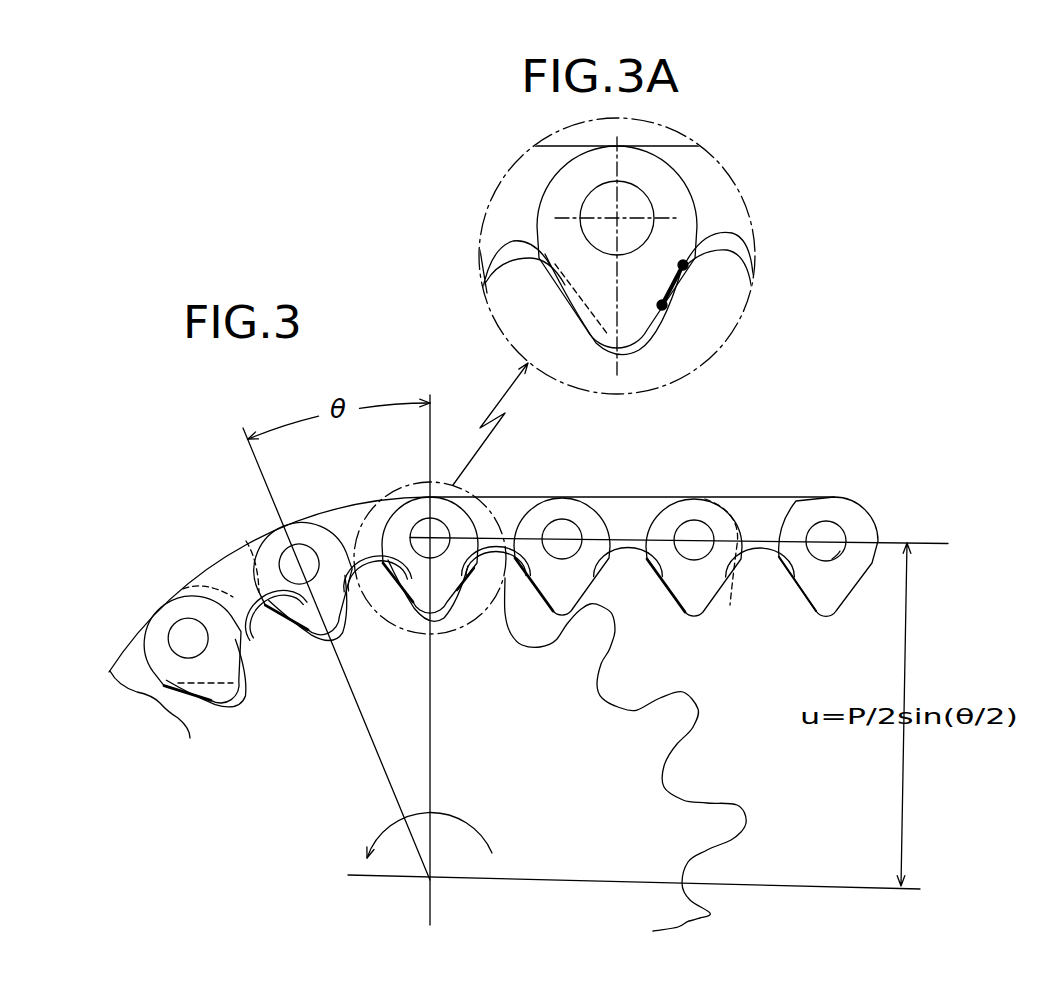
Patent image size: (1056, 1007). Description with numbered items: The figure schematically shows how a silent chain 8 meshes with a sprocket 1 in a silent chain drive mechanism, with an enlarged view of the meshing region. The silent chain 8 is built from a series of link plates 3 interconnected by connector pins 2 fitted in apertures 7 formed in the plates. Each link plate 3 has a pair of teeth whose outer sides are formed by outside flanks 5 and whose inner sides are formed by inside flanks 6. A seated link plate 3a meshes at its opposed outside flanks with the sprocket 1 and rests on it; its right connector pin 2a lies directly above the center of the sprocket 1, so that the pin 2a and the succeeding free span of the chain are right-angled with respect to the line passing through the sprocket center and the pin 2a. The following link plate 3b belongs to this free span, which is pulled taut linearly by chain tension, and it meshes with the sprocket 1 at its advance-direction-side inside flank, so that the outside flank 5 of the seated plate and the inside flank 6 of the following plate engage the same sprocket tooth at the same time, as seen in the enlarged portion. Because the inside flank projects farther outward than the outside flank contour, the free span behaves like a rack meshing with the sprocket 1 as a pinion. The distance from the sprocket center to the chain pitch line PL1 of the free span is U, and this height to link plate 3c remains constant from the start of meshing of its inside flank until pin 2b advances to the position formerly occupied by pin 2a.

In FIG. 3, the sprocket 1 is at (572, 815).
In FIG. 3, the connector pins 2 is at (709, 556).
In FIG. 3, the right connector pin 2a is at (447, 527).
In FIG. 3A, the right connector pin 2a is at (596, 212).
In FIG. 3, the pin 2b is at (565, 536).
In FIG. 3, the link plates 3 is at (781, 487).
In FIG. 3, the seated link plate 3a is at (348, 518).
In FIG. 3A, the seated link plate 3a is at (503, 223).
In FIG. 3, the following link plate 3b is at (520, 507).
In FIG. 3A, the following link plate 3b is at (722, 190).
In FIG. 3, the link plate 3c is at (640, 508).
In FIG. 3A, the outside flanks 5 is at (685, 312).
In FIG. 3A, the inside flanks 6 is at (702, 263).
In FIG. 3, the apertures 7 is at (837, 555).
In FIG. 3, the silent chain 8 is at (857, 472).
In FIG. 3, the chain pitch line PL1 is at (930, 543).